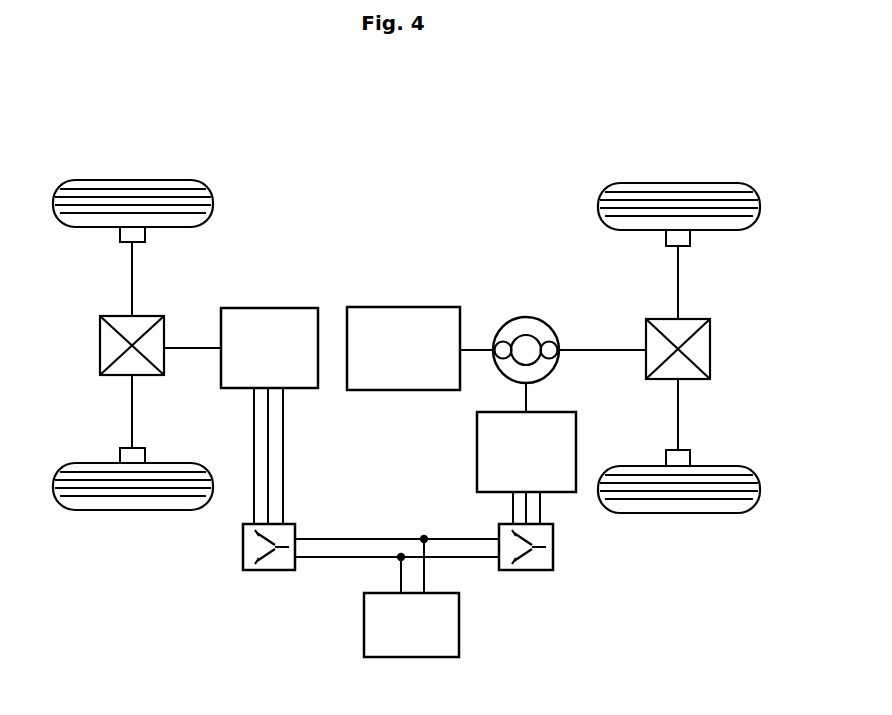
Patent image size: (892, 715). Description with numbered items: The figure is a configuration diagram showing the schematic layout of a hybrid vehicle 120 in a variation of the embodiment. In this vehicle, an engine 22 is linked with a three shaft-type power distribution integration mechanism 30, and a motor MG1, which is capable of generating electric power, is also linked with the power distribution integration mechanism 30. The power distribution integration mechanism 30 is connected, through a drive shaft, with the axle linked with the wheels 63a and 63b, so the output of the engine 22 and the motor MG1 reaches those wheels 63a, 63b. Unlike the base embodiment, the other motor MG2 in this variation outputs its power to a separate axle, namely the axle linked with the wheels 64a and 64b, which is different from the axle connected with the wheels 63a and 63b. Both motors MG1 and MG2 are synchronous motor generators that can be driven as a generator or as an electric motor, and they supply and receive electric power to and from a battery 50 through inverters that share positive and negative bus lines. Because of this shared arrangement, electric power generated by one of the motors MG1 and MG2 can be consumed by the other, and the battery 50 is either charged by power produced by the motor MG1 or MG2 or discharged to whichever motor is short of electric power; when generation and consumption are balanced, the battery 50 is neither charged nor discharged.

The hybrid vehicle 120 is at (431, 161).
The engine 22 is at (405, 307).
The power distribution integration mechanism 30 is at (533, 317).
The battery 50 is at (459, 623).
The motor MG1 is at (477, 450).
The motor MG2 is at (268, 308).
The wheel 63a is at (678, 183).
The wheel 63b is at (678, 513).
The wheel 64a is at (133, 180).
The wheel 64b is at (133, 510).